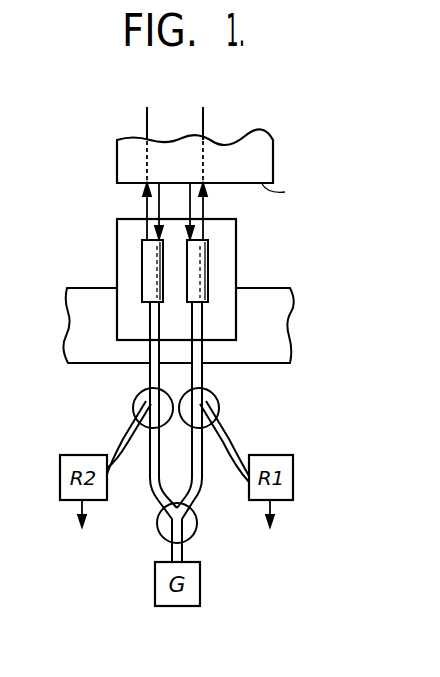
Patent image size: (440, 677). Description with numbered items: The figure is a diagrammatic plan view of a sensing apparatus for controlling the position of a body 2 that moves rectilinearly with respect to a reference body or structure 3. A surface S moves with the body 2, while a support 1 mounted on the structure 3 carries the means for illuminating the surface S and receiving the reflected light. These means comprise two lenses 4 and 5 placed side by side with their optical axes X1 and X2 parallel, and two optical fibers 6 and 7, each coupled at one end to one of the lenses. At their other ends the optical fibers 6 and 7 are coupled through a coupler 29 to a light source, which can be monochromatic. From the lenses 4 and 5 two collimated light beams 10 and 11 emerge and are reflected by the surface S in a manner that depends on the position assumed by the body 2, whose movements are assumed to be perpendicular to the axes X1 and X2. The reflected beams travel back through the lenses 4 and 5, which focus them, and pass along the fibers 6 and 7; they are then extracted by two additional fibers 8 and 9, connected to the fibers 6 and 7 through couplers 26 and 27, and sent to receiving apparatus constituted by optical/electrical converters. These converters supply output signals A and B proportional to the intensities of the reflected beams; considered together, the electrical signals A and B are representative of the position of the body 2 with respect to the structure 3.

The support 1 is at (117, 265).
The body 2 is at (117, 155).
The reference body or structure 3 is at (290, 293).
The lens 4 is at (142, 250).
The lens 5 is at (210, 250).
The optical fiber 6 is at (150, 378).
The optical fiber 7 is at (202, 380).
The additional fiber 8 is at (125, 440).
The additional fiber 9 is at (230, 450).
The collimated light beam 10 is at (145, 207).
The collimated light beam 11 is at (205, 207).
The coupler 26 is at (133, 408).
The coupler 27 is at (219, 408).
The coupler 29 is at (157, 522).
The surface S is at (281, 194).
The axis X1 is at (203, 114).
The axis X2 is at (147, 119).
The output signal A is at (268, 527).
The output signal B is at (79, 527).